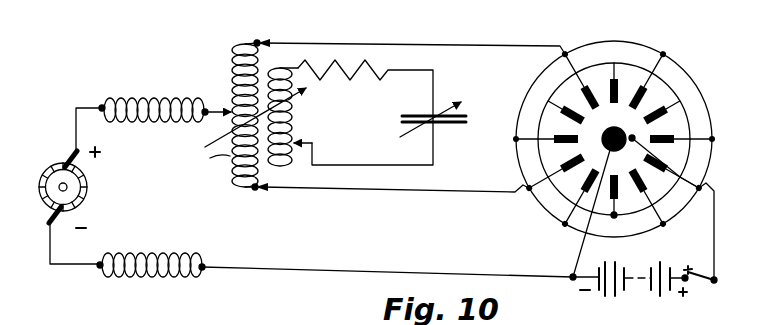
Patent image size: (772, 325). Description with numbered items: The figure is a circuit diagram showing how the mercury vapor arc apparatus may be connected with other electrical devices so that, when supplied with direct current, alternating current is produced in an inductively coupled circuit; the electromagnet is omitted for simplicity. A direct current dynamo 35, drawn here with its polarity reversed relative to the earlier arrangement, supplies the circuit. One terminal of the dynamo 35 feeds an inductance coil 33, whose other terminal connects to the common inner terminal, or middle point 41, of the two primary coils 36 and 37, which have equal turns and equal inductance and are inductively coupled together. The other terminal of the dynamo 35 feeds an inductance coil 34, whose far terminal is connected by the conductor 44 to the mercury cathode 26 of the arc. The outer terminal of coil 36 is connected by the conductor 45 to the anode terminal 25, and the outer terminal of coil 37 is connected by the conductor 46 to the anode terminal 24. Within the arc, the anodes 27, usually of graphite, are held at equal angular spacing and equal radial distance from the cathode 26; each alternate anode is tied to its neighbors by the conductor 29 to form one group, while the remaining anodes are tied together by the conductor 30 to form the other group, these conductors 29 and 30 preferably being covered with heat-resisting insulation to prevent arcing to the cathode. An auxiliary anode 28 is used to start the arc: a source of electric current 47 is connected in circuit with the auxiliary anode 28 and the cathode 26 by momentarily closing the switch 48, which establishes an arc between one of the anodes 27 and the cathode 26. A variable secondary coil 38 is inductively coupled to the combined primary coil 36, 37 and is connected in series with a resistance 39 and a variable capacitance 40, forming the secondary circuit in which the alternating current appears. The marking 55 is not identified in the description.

The anode terminal 24 is at (546, 189).
The anode terminal 25 is at (569, 48).
The mercury cathode 26 is at (606, 131).
The anodes 27 is at (644, 167).
The auxiliary anode 28 is at (632, 136).
The conductor 29 is at (635, 41).
The conductor 30 is at (693, 119).
The inductance coil 33 is at (143, 98).
The inductance coil 34 is at (143, 253).
The direct current dynamo 35 is at (89, 194).
The primary coil 36 is at (230, 61).
The primary coil 37 is at (207, 167).
The secondary coil 38 is at (293, 133).
The resistance 39 is at (352, 76).
The variable capacitance 40 is at (412, 114).
The junction point 41 is at (230, 110).
The conductor 44 is at (459, 273).
The conductor 45 is at (478, 46).
The conductor 46 is at (444, 192).
The source of electric current 47 is at (640, 302).
The switch 48 is at (701, 285).
The sheet marking 55 is at (250, 315).